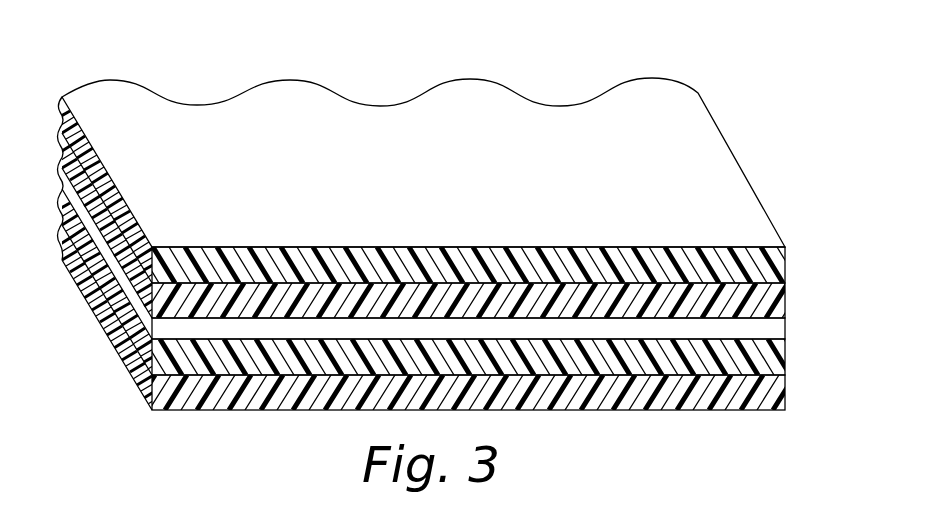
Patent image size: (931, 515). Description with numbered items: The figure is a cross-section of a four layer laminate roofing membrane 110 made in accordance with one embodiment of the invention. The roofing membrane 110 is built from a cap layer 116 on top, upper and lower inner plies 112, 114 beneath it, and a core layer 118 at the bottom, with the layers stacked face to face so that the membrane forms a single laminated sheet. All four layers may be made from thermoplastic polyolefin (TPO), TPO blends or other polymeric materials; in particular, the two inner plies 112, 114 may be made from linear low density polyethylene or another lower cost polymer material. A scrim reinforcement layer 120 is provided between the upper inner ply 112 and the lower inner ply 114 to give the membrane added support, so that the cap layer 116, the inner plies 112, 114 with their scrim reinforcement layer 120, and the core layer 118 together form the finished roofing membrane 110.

The four layer laminate roofing membrane 110 is at (205, 89).
The upper inner ply 112 is at (778, 300).
The lower inner ply 114 is at (778, 353).
The cap layer 116 is at (700, 185).
The core layer 118 is at (277, 397).
The scrim reinforcement layer 120 is at (777, 326).